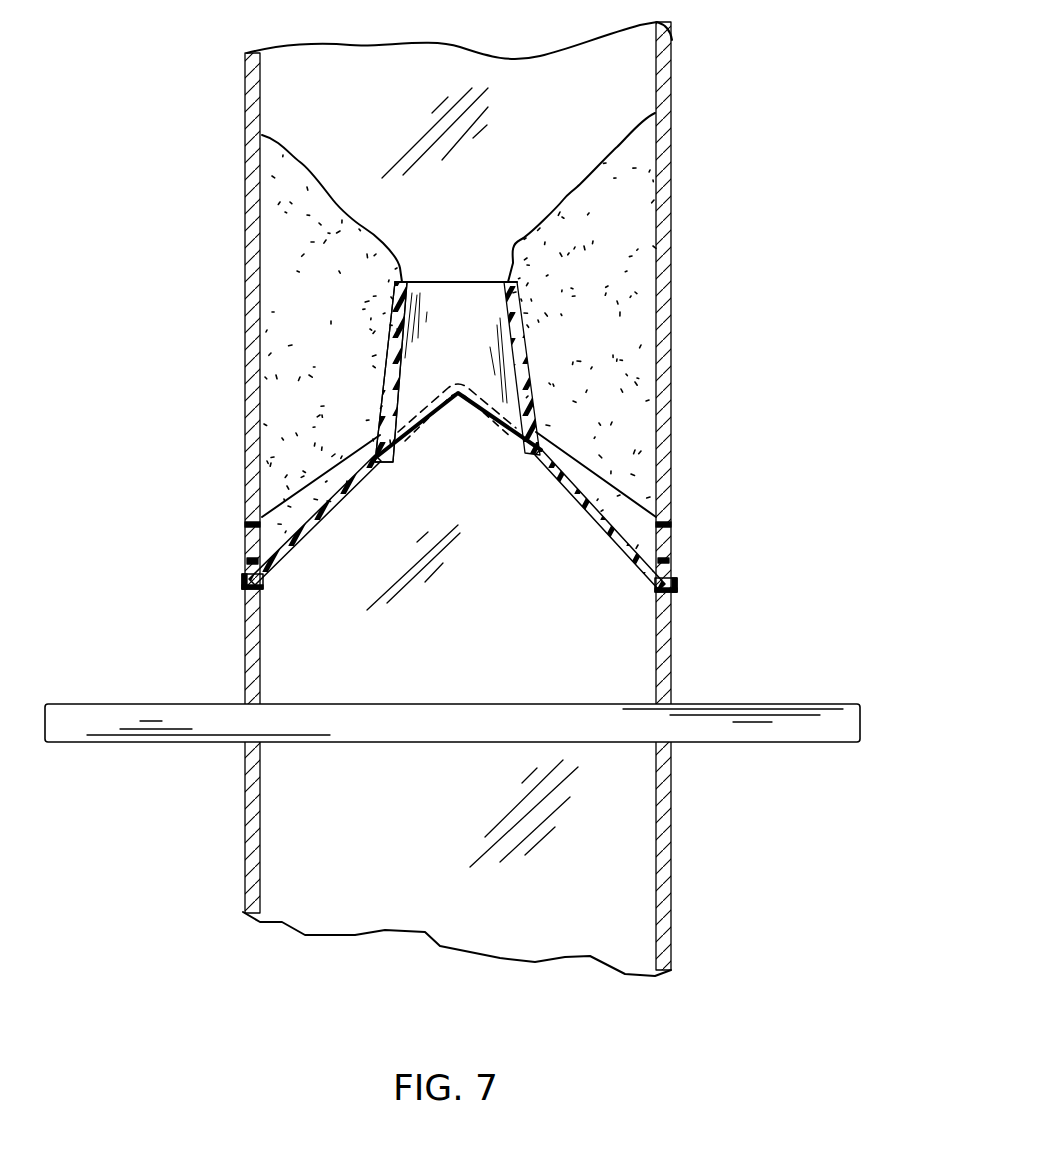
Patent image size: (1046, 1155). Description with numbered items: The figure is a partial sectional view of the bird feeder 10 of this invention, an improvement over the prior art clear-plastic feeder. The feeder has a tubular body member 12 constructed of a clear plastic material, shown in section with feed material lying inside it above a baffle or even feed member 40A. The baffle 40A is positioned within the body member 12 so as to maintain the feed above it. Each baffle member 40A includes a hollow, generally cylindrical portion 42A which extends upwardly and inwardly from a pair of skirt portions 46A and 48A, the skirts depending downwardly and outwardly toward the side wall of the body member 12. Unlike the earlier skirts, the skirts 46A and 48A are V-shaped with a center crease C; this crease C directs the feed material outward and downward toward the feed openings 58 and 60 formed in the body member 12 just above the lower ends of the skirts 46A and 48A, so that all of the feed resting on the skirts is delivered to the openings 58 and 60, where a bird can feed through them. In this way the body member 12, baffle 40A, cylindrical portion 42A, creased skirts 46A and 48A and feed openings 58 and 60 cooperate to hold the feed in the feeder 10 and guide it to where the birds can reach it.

The bird feeder 10 is at (708, 158).
The body member 12 is at (234, 268).
The baffle or even feed member 40A is at (534, 385).
The hollow generally cylindrical portion 42A is at (393, 352).
The skirt 46A is at (598, 472).
The skirt 48A is at (300, 488).
The center crease C is at (598, 517).
The feed opening 58 is at (245, 551).
The feed opening 60 is at (663, 553).